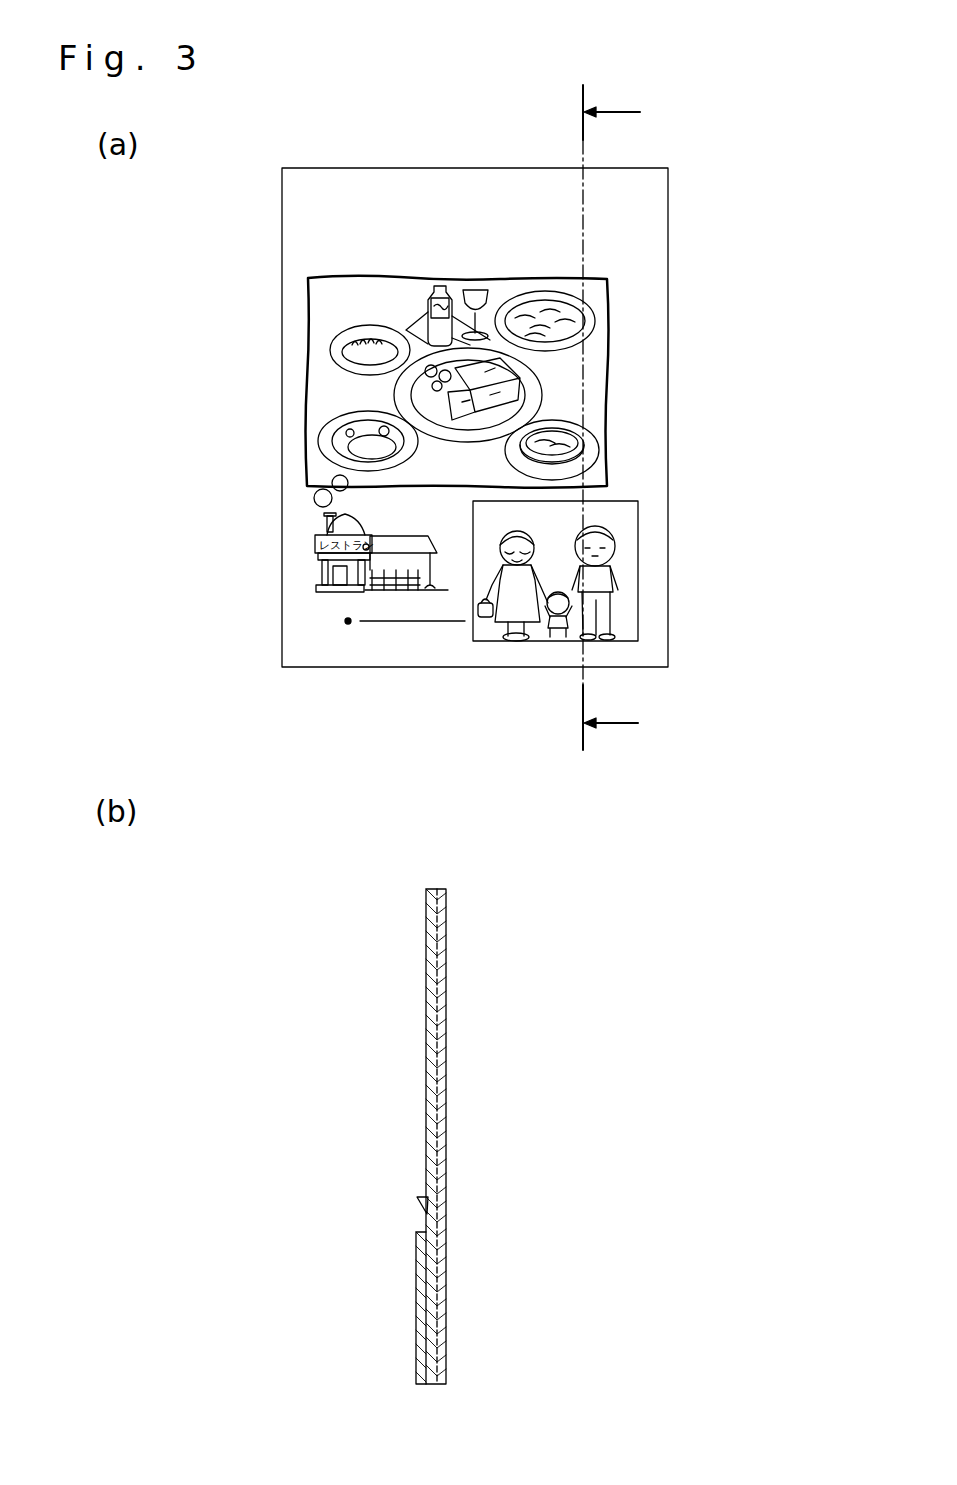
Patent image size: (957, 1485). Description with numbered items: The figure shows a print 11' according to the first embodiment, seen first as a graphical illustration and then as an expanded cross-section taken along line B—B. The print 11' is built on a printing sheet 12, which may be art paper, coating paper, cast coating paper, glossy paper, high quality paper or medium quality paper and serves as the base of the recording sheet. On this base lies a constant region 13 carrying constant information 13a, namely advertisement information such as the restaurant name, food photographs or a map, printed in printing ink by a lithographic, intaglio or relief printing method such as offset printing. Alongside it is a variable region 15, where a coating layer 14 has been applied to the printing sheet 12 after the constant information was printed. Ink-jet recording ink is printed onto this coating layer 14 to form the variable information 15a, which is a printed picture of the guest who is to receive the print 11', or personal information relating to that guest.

The print 11' is at (407, 508).
The printing sheet 12 is at (667, 473).
The constant region 13 is at (650, 268).
The constant information 13a is at (637, 375).
The coating layer 14 is at (427, 1212).
The variable region 15 is at (638, 585).
The variable information 15a is at (600, 528).